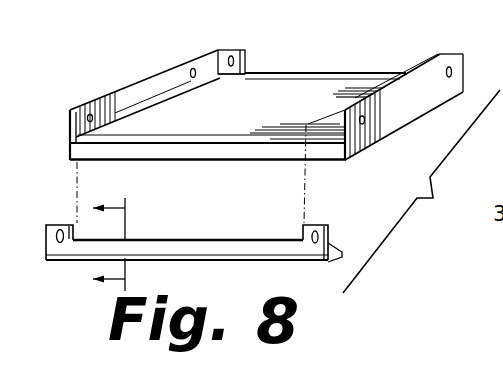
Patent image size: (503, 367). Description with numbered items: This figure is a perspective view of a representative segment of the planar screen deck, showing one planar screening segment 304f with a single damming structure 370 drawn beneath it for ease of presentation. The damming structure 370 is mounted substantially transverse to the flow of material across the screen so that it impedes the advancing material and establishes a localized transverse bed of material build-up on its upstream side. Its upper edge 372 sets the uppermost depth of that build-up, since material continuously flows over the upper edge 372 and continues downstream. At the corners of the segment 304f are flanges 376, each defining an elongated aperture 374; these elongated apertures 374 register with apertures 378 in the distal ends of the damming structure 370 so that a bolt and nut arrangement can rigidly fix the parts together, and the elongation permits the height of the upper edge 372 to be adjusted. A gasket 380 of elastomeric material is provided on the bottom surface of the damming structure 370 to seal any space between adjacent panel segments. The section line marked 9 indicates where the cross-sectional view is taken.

The planar screening segment 304f is at (304, 110).
The flange 376 is at (231, 57).
The elongated aperture 374 is at (246, 61).
The damming structure 370 is at (278, 251).
The upper edge 372 is at (217, 240).
The aperture 378 is at (58, 228).
The gasket 380 is at (335, 251).
The section line 9- 9 is at (119, 243).